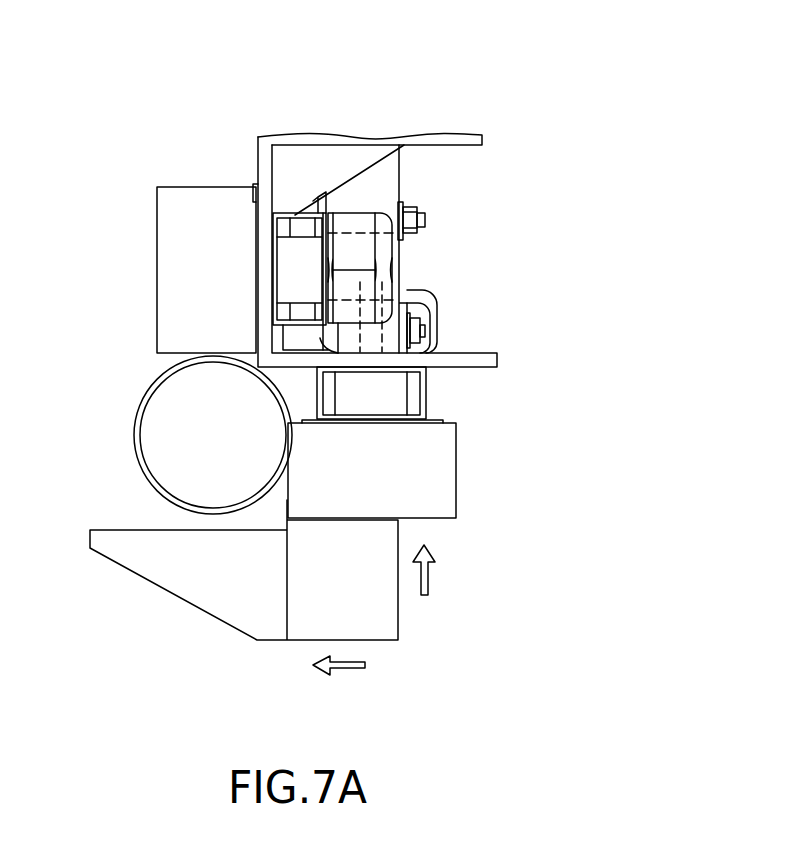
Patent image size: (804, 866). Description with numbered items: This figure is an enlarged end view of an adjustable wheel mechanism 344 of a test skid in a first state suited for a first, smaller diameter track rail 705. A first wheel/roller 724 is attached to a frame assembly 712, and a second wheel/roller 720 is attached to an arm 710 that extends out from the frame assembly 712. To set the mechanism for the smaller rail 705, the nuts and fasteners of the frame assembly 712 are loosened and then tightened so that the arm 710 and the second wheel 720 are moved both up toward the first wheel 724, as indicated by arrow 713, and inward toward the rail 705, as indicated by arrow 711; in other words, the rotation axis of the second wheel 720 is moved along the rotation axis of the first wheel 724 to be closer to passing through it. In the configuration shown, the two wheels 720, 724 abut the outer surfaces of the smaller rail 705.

The adjustable wheel mechanism 344 is at (385, 77).
The first track rail 705 is at (138, 418).
The arm 710 is at (398, 628).
The arrow 711 is at (353, 668).
The frame assembly 712 is at (460, 302).
The arrow 713 is at (428, 578).
The second wheel/roller 720 is at (456, 467).
The first wheel/roller 724 is at (157, 233).